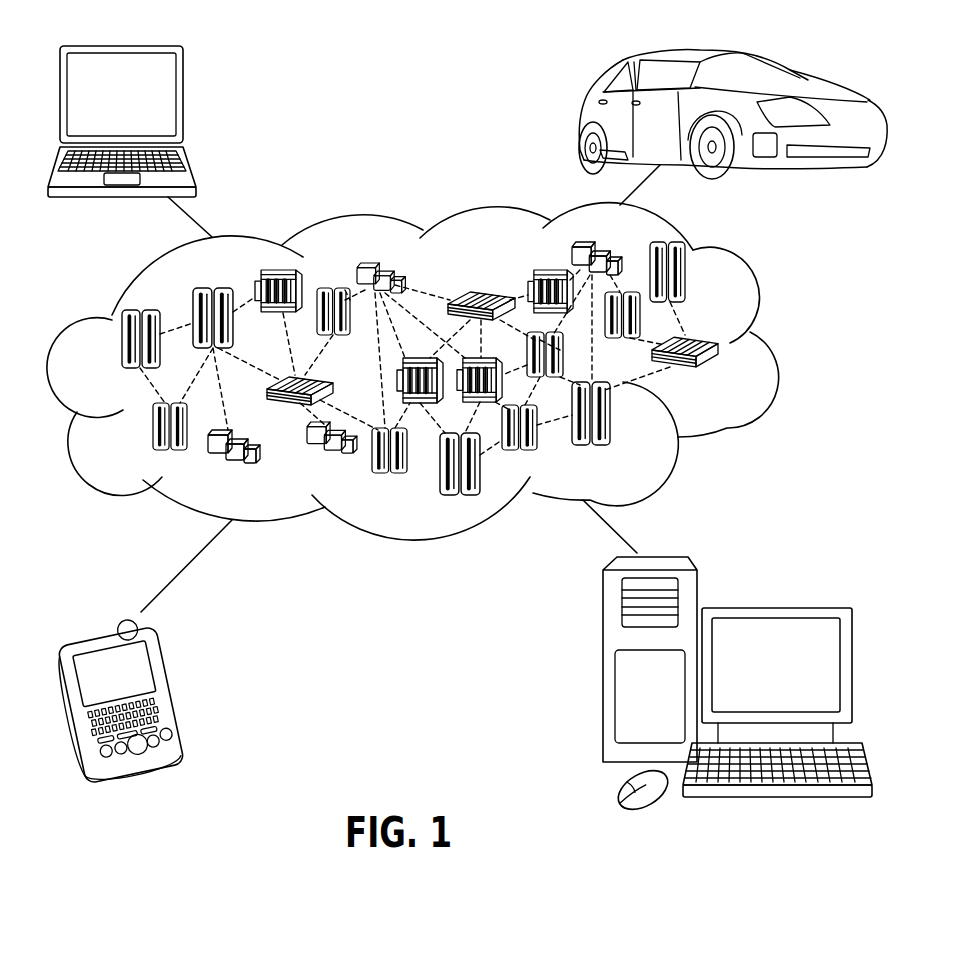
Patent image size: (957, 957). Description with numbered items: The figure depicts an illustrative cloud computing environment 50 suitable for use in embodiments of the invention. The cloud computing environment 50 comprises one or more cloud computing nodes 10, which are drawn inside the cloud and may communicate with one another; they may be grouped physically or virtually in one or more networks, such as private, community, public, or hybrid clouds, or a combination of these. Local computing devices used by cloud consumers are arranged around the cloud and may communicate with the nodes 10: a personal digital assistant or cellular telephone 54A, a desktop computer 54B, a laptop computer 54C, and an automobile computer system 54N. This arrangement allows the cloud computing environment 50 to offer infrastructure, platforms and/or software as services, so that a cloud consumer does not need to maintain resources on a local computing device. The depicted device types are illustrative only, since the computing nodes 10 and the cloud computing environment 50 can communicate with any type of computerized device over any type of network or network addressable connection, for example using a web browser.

The cloud computing nodes 10 is at (723, 403).
The cloud computing environment 50 is at (770, 350).
The personal digital assistant (PDA) or cellular telephone 54A is at (175, 693).
The desktop computer 54B is at (772, 608).
The laptop computer 54C is at (183, 105).
The automobile computer system 54N is at (578, 118).